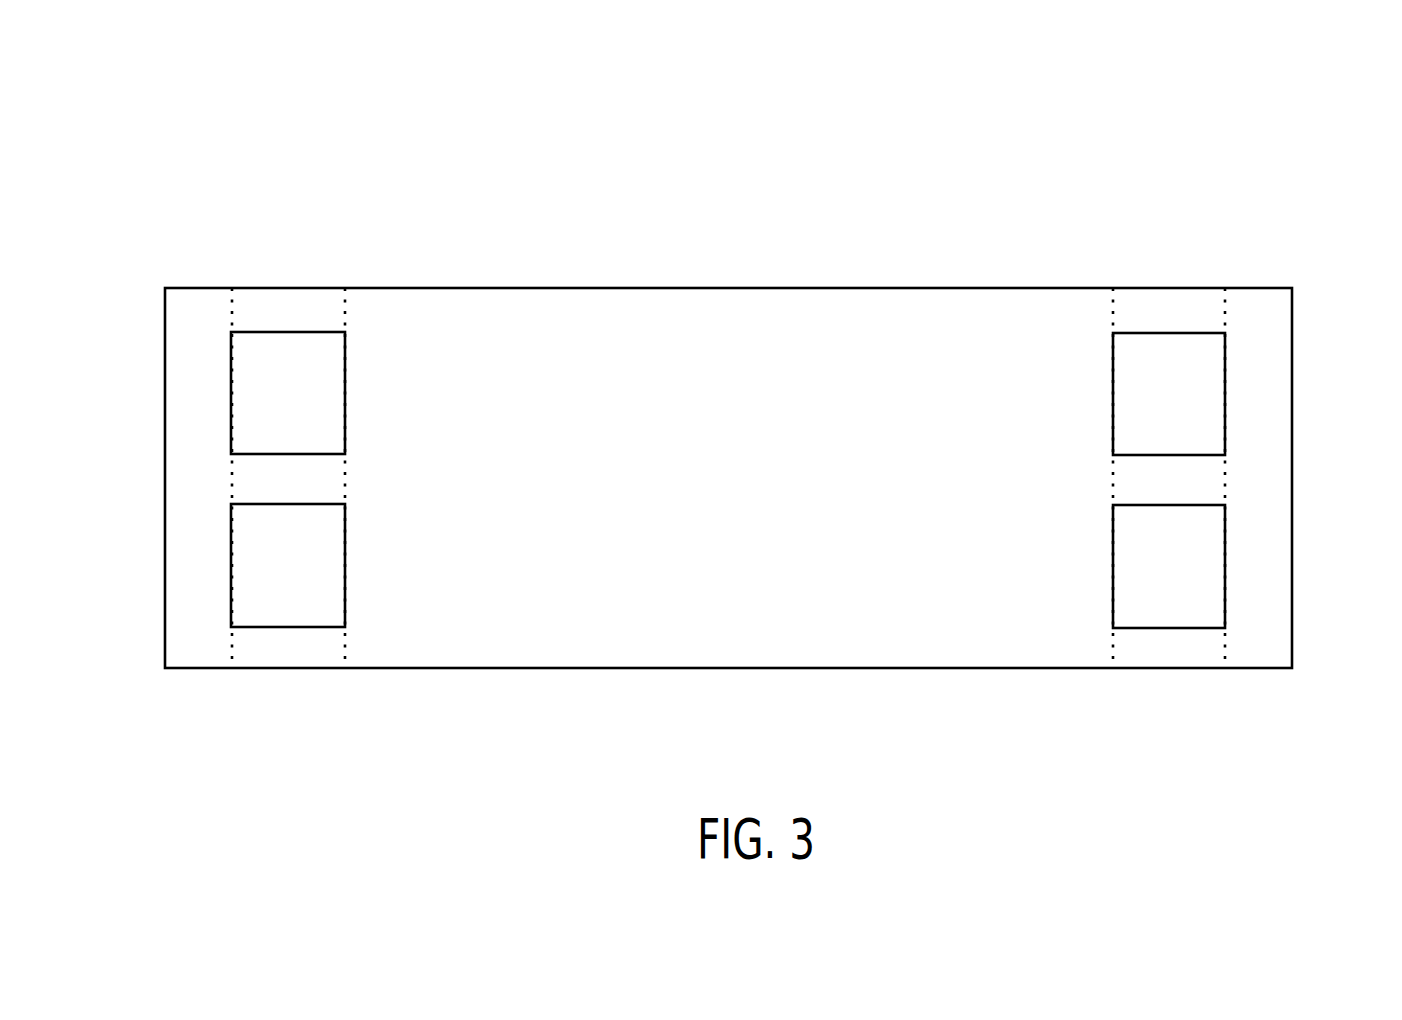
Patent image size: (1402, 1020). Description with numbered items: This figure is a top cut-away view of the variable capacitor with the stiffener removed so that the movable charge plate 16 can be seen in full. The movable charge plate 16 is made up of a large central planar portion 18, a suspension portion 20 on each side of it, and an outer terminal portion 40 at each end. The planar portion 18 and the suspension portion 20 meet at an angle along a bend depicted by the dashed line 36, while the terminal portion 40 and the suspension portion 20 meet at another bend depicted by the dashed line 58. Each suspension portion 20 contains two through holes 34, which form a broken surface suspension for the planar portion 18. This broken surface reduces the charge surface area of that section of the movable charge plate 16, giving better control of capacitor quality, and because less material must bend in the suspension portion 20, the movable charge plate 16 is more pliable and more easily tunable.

The movable charge plate 16 is at (940, 238).
The planar portion 18 is at (687, 335).
The suspension portion 20 is at (297, 308).
The through holes 34 is at (247, 352).
The dashed line 36 is at (1110, 258).
The terminal portion 40 is at (188, 300).
The dashed line 58 is at (230, 258).